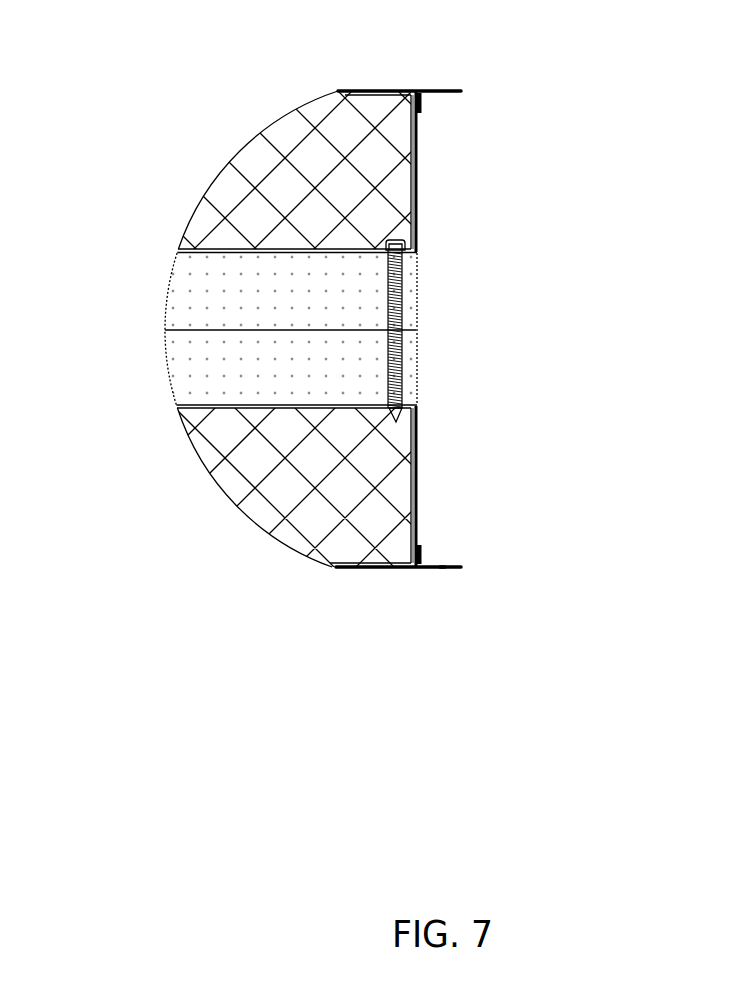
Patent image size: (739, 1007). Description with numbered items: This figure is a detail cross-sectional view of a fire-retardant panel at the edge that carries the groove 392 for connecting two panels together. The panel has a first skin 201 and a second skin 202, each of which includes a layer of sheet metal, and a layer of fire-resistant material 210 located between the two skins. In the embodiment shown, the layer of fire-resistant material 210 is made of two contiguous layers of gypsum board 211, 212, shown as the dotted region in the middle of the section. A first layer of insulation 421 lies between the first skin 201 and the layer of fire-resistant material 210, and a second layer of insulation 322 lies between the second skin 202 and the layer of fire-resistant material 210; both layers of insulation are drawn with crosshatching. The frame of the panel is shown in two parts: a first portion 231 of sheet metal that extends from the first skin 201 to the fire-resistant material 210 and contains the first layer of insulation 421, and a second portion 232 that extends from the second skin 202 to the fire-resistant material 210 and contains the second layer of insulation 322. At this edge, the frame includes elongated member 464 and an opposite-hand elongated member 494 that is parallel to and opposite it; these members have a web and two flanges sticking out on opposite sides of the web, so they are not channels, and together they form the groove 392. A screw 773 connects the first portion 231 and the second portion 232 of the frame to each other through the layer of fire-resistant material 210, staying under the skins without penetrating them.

The first skin 201 is at (400, 570).
The second skin 202 is at (432, 90).
The layer of fire-resistant material 210 is at (188, 329).
The layer of gypsum board 211 is at (187, 375).
The layer of gypsum board 212 is at (177, 290).
The first portion of the frame 231 is at (418, 423).
The second portion of the frame 232 is at (418, 202).
The second layer of insulation 322 is at (240, 177).
The groove 392 is at (455, 563).
The first layer of insulation 421 is at (277, 522).
The elongated member 464 is at (418, 493).
The elongated member 494 is at (418, 130).
The screw 773 is at (400, 297).